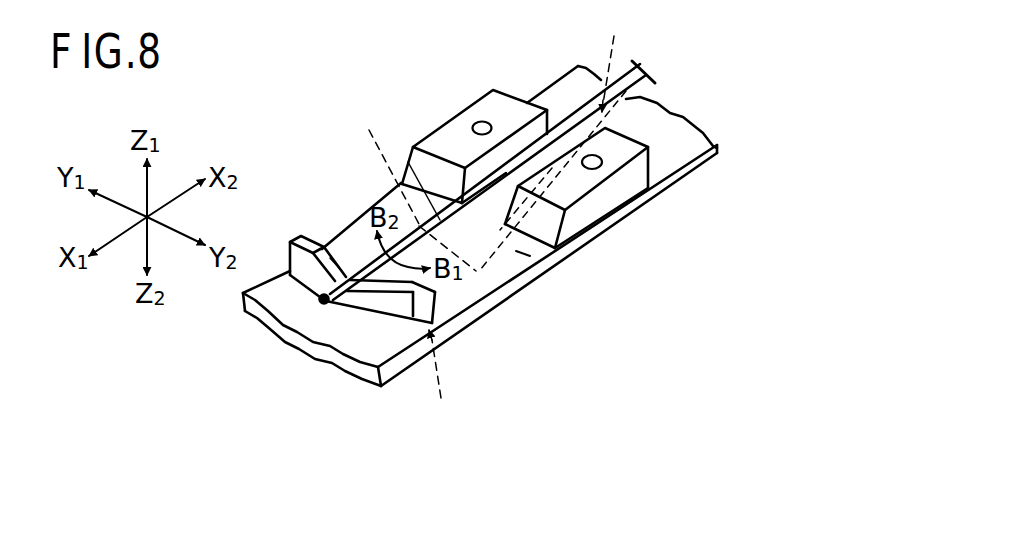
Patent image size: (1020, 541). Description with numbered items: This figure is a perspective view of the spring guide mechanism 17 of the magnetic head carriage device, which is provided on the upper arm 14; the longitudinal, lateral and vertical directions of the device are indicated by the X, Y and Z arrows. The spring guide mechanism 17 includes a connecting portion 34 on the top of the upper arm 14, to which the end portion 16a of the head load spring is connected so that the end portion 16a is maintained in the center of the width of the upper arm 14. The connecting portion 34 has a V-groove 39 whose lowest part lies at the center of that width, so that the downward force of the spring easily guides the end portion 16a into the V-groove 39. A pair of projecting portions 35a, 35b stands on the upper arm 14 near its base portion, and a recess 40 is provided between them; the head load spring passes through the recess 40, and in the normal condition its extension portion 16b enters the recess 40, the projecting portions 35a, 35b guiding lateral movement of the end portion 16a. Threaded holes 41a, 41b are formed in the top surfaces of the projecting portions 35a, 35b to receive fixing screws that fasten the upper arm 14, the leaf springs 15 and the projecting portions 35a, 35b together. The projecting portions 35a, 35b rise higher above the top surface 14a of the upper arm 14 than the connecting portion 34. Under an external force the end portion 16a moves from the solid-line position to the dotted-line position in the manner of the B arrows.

The upper arm 14 is at (470, 330).
The top surface of the upper arm 14a is at (525, 250).
The leaf springs 15 is at (675, 162).
The end portion of the head load spring 16a is at (327, 306).
The extension portion of the head load spring 16b is at (408, 162).
The spring guide mechanism 17 is at (505, 226).
The connecting portion 34 is at (381, 304).
The projecting portion 35a is at (577, 182).
The projecting portion 35b is at (489, 102).
The V-groove 39 is at (360, 270).
The recess 40 is at (512, 181).
The threaded hole 41a is at (600, 152).
The threaded hole 41b is at (477, 124).